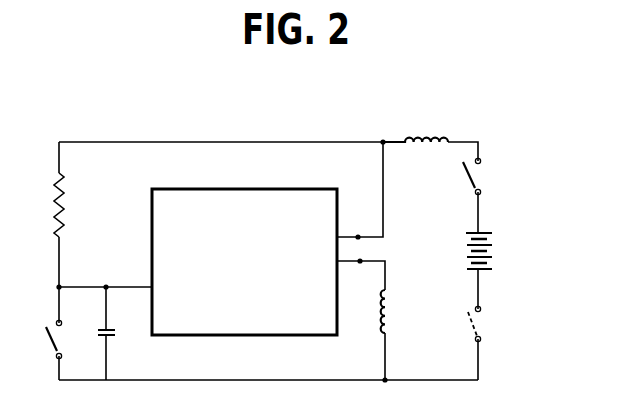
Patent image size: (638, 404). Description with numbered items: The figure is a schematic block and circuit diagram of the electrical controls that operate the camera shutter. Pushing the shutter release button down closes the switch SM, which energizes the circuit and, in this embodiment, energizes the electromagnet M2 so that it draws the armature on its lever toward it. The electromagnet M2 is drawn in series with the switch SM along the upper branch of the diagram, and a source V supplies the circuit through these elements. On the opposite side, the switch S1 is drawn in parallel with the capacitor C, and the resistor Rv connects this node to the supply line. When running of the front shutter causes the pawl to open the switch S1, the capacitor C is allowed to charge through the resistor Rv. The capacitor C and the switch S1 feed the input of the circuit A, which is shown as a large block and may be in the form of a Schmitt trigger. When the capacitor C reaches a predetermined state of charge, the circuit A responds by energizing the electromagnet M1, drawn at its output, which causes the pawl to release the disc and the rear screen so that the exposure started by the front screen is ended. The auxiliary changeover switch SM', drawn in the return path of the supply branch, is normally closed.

The circuit A is at (244, 262).
The resistor Rv is at (43, 205).
The switch S1 is at (43, 339).
The capacitor C is at (116, 333).
The electromagnet M1 is at (402, 313).
The electromagnet M2 is at (415, 124).
The switch SM is at (494, 176).
The battery voltage source V is at (491, 254).
The auxiliary changeover switch SM' is at (502, 324).